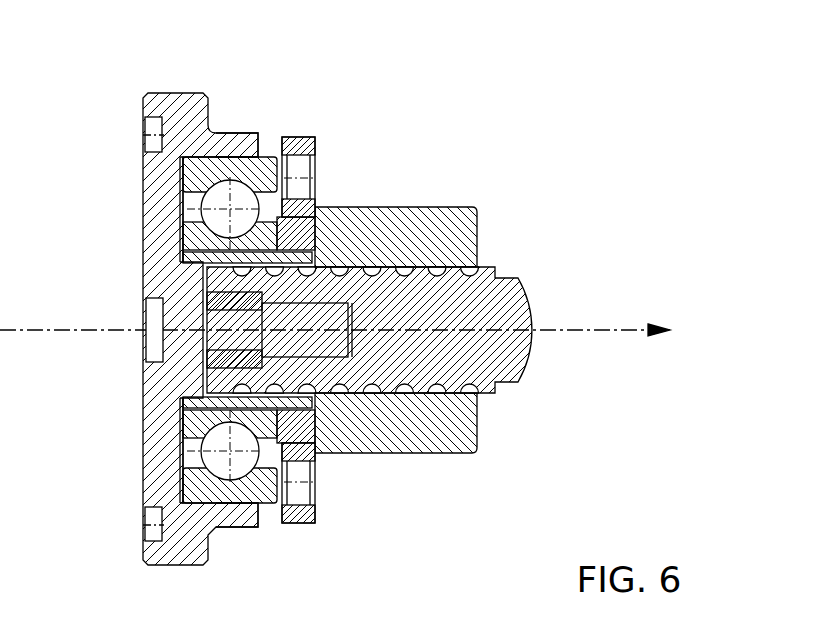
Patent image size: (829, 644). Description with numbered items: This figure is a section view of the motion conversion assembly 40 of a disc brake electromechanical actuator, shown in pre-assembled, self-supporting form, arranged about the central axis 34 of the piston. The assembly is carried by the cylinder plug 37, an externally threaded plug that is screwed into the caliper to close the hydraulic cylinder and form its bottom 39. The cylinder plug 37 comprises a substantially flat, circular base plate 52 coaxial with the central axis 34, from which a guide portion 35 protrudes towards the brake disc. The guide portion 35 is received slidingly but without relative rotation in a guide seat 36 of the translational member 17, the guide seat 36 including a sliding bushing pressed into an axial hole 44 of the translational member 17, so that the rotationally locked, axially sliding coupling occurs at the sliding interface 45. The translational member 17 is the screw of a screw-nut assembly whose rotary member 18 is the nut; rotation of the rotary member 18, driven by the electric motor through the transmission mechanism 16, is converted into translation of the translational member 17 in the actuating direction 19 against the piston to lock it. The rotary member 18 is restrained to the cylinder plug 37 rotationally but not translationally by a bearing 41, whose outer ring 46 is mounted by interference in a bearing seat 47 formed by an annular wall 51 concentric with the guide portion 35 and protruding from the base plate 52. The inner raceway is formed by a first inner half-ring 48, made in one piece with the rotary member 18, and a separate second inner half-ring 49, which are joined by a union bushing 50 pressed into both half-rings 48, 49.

The transmission mechanism 16 is at (400, 298).
The translational member 17 is at (497, 305).
The rotary member 18 is at (430, 440).
The actuating direction 19 is at (658, 336).
The central axis 34 is at (105, 338).
The guide portion 35 is at (300, 327).
The guide seat 36 is at (303, 172).
The cylinder plug 37 is at (160, 450).
The bottom of the hydraulic cylinder 39 is at (183, 188).
The motion conversion assembly 40 is at (357, 497).
The bearing 41 is at (245, 503).
The axial hole 44 is at (337, 355).
The sliding interface 45 is at (233, 343).
The outer ring 46 is at (265, 503).
The bearing seat 47 is at (214, 133).
The first inner half-ring 48 is at (240, 452).
The second inner half-ring 49 is at (172, 455).
The union bushing 50 is at (243, 258).
The annular wall 51 is at (206, 152).
The base plate 52 is at (203, 305).